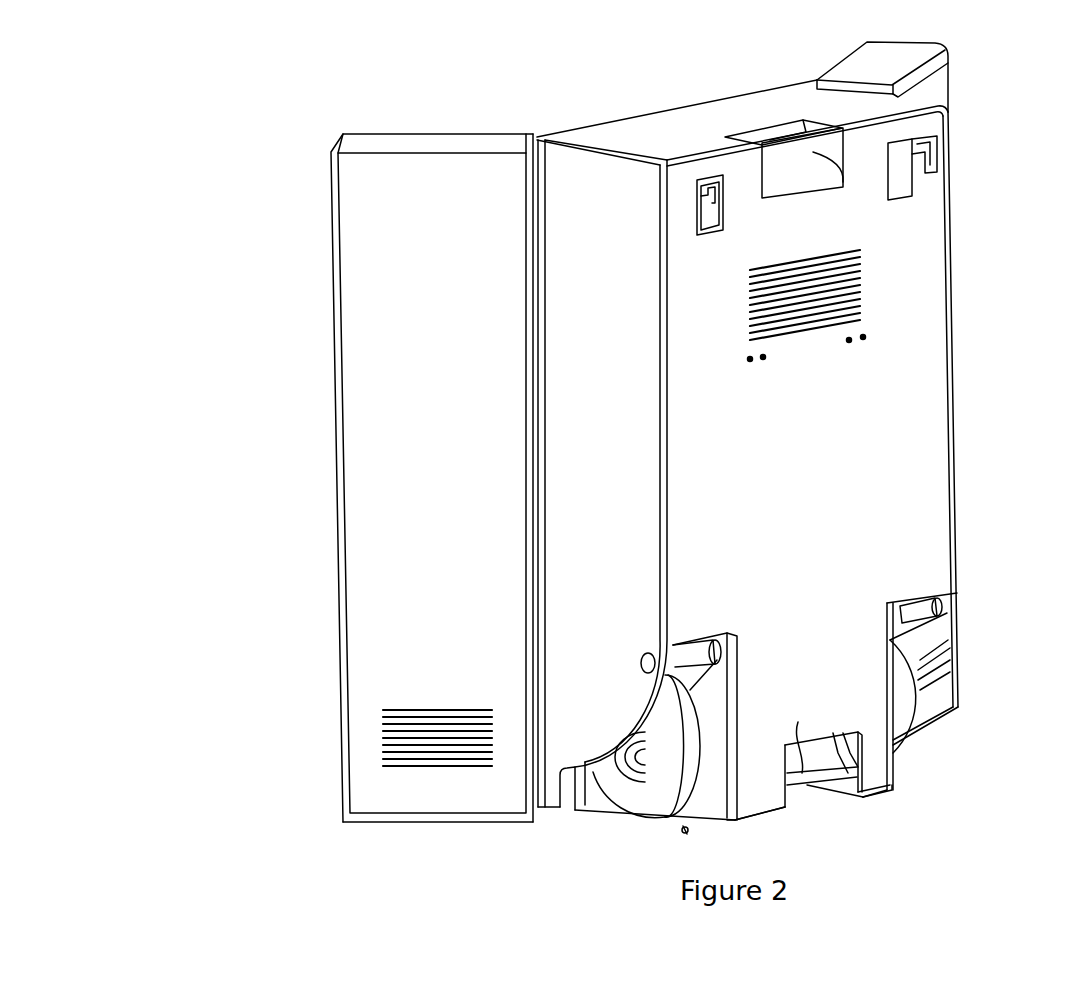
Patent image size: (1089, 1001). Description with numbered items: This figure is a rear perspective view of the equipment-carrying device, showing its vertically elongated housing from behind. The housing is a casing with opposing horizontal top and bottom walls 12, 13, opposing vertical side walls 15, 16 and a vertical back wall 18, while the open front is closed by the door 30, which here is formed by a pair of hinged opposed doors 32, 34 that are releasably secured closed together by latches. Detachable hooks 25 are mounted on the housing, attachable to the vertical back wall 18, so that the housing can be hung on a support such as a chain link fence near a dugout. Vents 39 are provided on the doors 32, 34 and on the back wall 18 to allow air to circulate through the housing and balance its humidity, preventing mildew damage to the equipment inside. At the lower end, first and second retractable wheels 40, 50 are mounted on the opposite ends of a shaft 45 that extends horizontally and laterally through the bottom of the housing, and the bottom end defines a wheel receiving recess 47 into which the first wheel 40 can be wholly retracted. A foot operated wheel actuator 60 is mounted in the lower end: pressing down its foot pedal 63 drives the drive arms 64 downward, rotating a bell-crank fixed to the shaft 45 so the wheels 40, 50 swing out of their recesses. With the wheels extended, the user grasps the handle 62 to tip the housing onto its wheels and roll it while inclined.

The top wall 12 is at (603, 123).
The bottom wall 13 is at (877, 793).
The side wall 15 is at (633, 438).
The side wall 16 is at (955, 363).
The back wall 18 is at (900, 477).
The detachable hooks 25 is at (708, 187).
The door 30 is at (287, 395).
The hinged door 32 is at (393, 223).
The hinged door 34 is at (887, 58).
The vents 39 is at (867, 258).
The first retractable wheel 40 is at (648, 788).
The shaft 45 is at (903, 617).
The wheel receiving recess 47 is at (685, 834).
The second retractable wheel 50 is at (903, 710).
The wheel actuator 60 is at (800, 816).
The handle 62 is at (785, 137).
The foot pedal 63 is at (840, 778).
The drive arms 64 is at (798, 768).